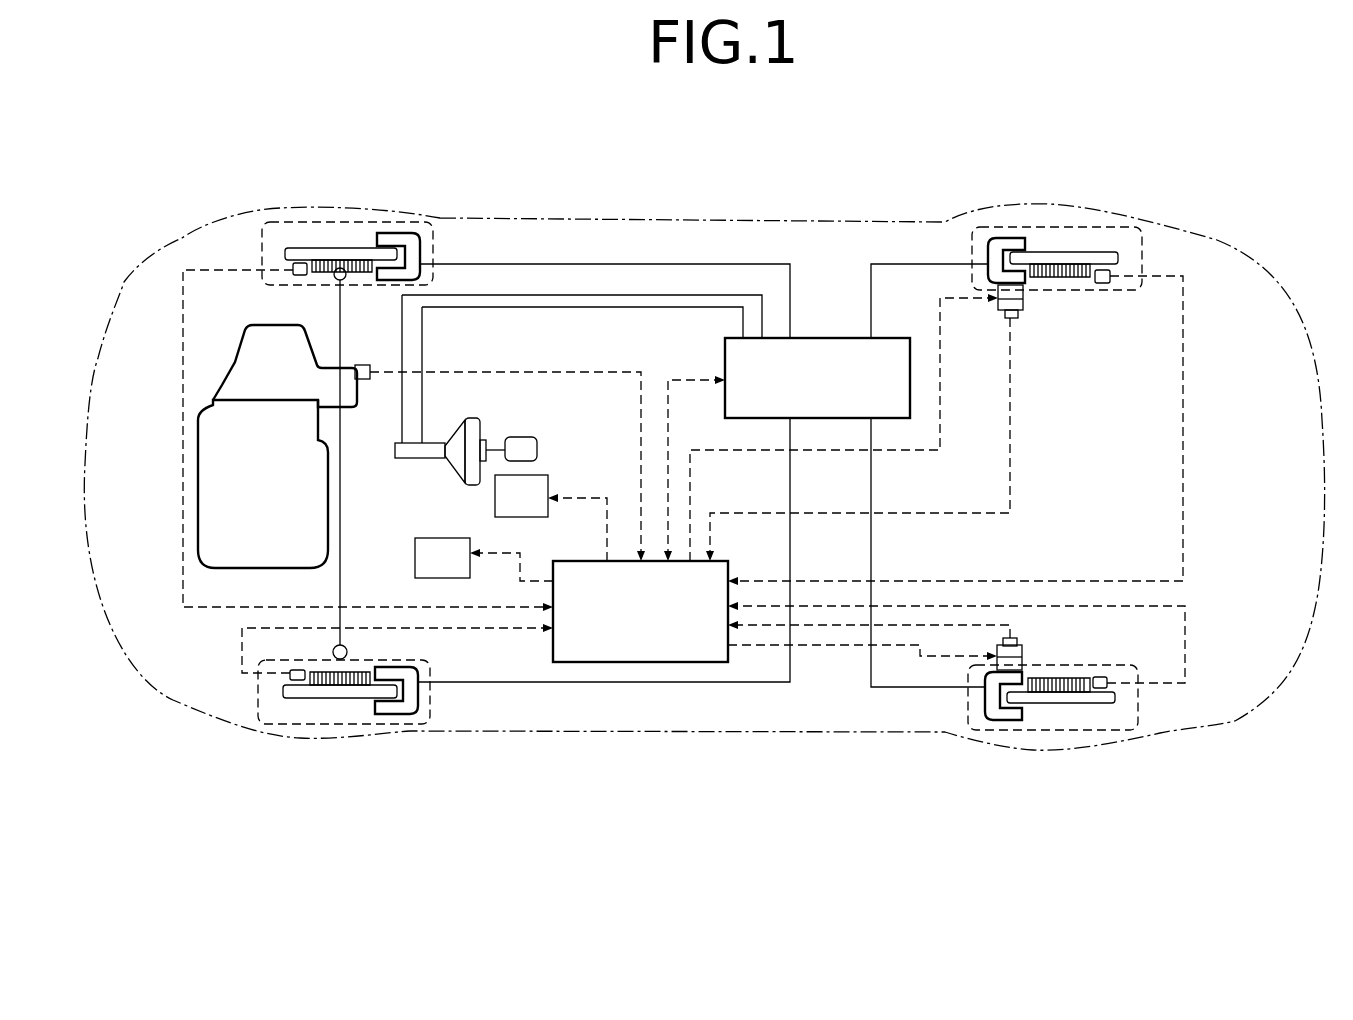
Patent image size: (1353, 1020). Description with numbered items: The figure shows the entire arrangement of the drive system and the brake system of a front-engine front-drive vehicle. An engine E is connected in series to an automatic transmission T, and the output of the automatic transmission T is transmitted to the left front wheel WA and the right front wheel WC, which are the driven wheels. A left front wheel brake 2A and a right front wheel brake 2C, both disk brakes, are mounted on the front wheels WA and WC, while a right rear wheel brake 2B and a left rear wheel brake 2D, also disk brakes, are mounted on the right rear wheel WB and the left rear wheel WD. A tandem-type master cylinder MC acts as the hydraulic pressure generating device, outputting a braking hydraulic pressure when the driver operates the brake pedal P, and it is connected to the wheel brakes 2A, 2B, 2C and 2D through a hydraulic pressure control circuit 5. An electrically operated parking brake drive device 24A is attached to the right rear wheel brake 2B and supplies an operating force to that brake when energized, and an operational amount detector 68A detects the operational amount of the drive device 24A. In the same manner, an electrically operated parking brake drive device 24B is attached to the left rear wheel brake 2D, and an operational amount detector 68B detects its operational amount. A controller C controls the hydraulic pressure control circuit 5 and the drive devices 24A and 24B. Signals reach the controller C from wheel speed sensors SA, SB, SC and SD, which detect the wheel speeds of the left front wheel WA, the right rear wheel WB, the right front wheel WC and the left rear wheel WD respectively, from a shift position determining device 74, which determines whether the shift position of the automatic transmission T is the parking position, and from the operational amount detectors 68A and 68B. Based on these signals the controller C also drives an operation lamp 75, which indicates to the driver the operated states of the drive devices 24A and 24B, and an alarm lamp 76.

The right front wheel WC is at (313, 218).
The right front wheel brake 2C is at (398, 226).
The wheel speed sensor SC is at (293, 270).
The right rear wheel WB is at (1047, 223).
The right rear wheel brake 2B is at (986, 228).
The wheel speed sensor SB is at (1105, 283).
The electrically operated parking brake drive device 24A is at (1022, 296).
The operational amount detector 68A is at (1017, 318).
The left front wheel WA is at (313, 737).
The left front wheel brake 2A is at (402, 725).
The wheel speed sensor SA is at (290, 678).
The left rear wheel WD is at (1037, 730).
The left rear wheel brake 2D is at (996, 725).
The wheel speed sensor SD is at (1100, 690).
The electrically operated parking brake drive device 24B is at (1023, 658).
The operational amount detector 68B is at (1014, 636).
The automatic transmission T is at (283, 376).
The engine E is at (282, 526).
The shift position determining device 74 is at (363, 365).
The master cylinder MC is at (407, 458).
The brake pedal P is at (537, 449).
The hydraulic pressure control circuit 5 is at (830, 396).
The controller C is at (650, 626).
The alarm lamp 76 is at (548, 484).
The operation lamp 75 is at (430, 560).